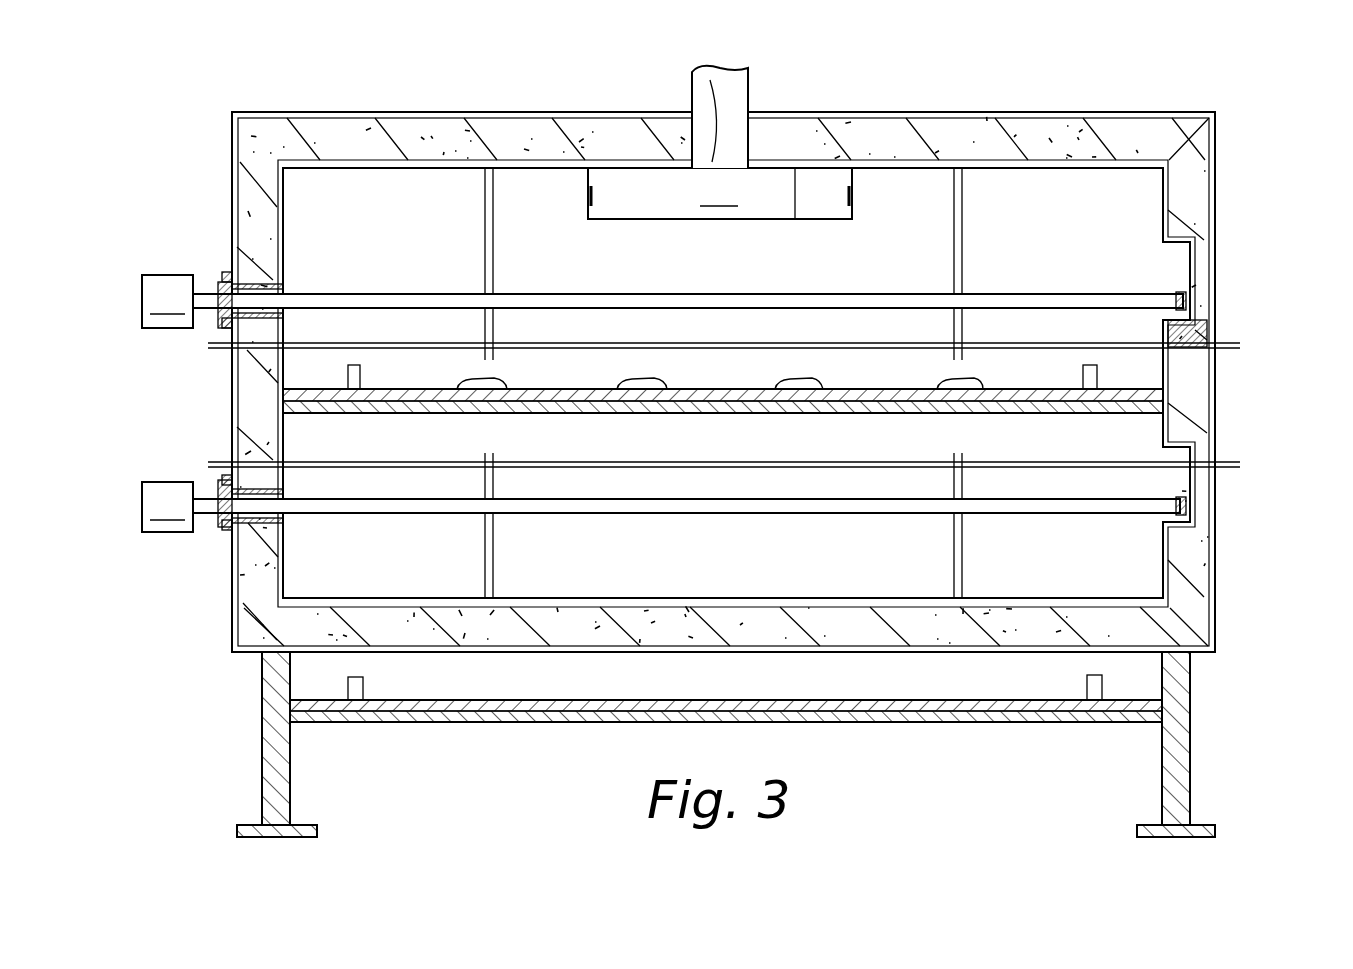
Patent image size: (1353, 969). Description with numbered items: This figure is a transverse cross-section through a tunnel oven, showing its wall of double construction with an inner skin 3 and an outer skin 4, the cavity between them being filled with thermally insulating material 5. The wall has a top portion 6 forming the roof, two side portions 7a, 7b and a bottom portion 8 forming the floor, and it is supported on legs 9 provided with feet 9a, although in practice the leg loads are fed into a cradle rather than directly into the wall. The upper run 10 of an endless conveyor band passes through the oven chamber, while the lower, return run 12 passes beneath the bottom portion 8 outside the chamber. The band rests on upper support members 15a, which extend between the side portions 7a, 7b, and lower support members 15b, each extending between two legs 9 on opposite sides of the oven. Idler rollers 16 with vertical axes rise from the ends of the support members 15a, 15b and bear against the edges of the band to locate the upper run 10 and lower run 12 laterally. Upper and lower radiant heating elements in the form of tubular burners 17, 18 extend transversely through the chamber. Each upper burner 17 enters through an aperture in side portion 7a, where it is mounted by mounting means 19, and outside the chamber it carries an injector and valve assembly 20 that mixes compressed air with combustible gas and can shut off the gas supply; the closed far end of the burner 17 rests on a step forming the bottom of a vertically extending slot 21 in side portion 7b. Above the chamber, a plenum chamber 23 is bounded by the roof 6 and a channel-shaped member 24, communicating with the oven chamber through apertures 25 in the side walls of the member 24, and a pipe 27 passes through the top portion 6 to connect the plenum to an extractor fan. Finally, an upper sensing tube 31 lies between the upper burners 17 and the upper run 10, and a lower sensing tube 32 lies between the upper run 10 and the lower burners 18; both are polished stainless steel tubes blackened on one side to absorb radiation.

The inner skin 3 is at (277, 207).
The outer skin 4 is at (237, 567).
The thermally insulating material 5 is at (250, 620).
The top portion 6 is at (908, 101).
The side portion 7a is at (220, 385).
The side portion 7b is at (1237, 186).
The bottom portion 8 is at (1020, 658).
The legs 9 is at (291, 778).
The feet 9a is at (276, 838).
The upper run 10 is at (692, 388).
The lower run 12 is at (538, 699).
The upper support members 15a is at (1133, 412).
The lower support members 15b is at (893, 723).
The idler rollers 16 is at (361, 372).
The upper radiant heating elements 17 is at (1048, 302).
The lower radiant heating elements 18 is at (1062, 506).
The mounting means 19 is at (212, 273).
The injector and valve assembly 20 is at (167, 403).
The vertically extending slot 21 is at (1173, 275).
The plenum chamber 23 is at (720, 193).
The channel-shaped member 24 is at (796, 215).
The apertures 25 is at (588, 198).
The pipe 27 is at (708, 140).
The upper sensing tube 31 is at (988, 343).
The lower sensing tube 32 is at (808, 468).